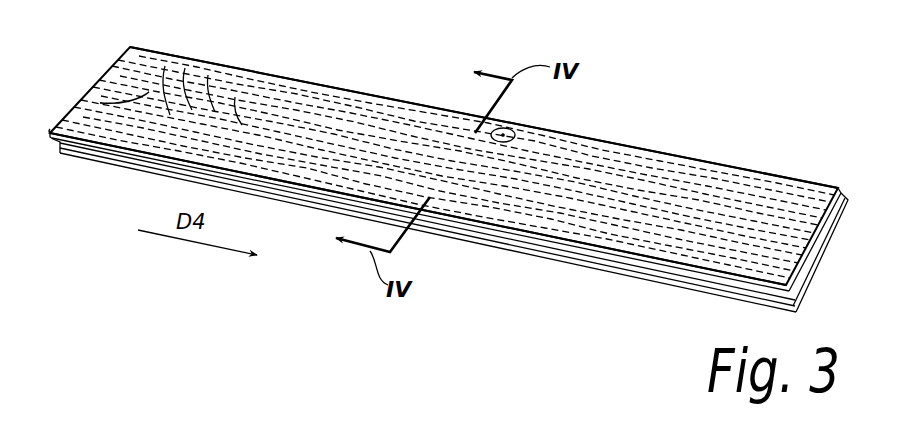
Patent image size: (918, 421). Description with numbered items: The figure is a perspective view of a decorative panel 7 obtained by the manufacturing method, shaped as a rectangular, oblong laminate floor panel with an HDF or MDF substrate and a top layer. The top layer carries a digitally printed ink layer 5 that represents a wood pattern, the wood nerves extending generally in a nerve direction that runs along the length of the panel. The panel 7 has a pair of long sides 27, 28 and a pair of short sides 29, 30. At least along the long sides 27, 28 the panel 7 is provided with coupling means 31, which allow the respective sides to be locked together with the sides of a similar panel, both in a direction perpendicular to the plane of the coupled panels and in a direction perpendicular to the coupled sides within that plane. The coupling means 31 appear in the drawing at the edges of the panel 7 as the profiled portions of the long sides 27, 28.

The digitally printed ink layer 5 is at (570, 166).
The decorative panel 7 is at (714, 147).
The long side 27 is at (326, 82).
The long side 28 is at (668, 281).
The short side 29 is at (107, 68).
The short side 30 is at (833, 242).
The coupling means 31 is at (48, 137).